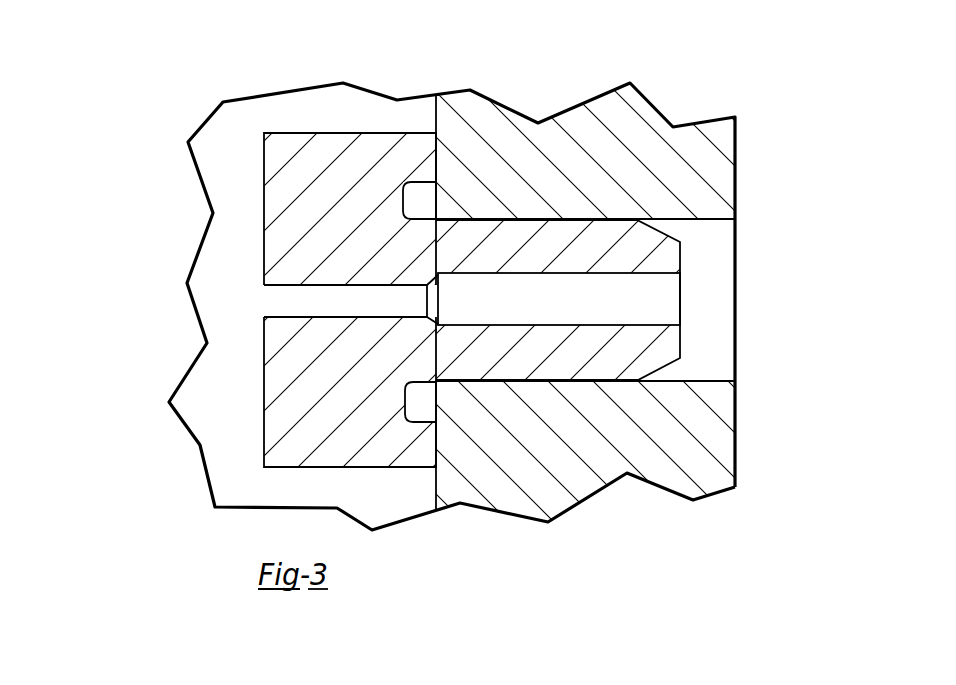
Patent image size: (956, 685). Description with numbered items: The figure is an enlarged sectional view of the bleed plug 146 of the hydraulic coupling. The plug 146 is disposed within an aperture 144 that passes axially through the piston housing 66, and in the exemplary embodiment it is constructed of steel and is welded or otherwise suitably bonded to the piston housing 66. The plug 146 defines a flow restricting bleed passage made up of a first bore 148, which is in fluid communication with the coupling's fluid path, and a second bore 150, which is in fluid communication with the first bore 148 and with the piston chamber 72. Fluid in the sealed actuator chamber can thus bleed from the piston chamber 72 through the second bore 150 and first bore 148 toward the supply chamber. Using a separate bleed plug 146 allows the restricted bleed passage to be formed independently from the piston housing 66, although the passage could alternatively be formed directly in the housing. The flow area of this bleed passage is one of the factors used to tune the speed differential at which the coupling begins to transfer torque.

The piston chamber 72 is at (257, 110).
The bleed plug 146 is at (361, 122).
The second bore 150 is at (263, 293).
The piston housing 66 is at (588, 148).
The aperture 144 is at (708, 379).
The first bore 148 is at (558, 275).